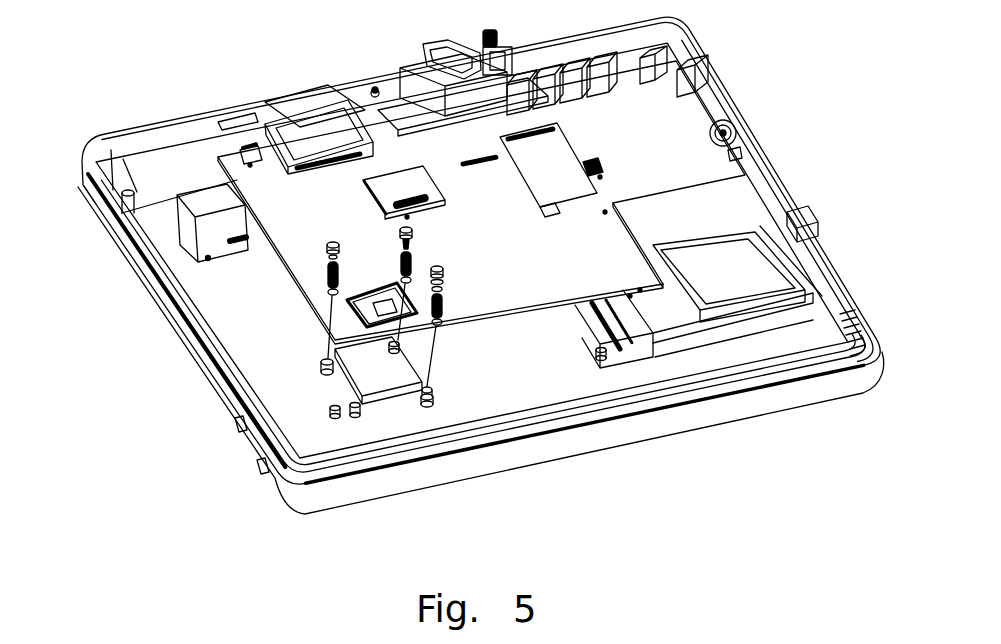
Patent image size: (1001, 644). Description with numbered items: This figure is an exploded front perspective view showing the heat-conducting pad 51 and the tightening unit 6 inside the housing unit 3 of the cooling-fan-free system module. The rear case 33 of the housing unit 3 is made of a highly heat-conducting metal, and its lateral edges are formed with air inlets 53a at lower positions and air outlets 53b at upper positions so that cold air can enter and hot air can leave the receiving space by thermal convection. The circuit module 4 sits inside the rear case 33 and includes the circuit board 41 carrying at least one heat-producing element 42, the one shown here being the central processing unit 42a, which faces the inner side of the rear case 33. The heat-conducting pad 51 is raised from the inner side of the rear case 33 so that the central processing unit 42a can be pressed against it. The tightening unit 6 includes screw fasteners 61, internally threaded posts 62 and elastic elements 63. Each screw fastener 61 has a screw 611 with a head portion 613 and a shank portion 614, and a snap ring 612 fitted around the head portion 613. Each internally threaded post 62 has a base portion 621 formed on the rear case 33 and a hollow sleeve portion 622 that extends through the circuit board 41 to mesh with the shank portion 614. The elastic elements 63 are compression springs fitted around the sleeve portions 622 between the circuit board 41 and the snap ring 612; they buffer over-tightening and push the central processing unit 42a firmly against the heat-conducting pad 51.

The housing unit 3 is at (803, 400).
The circuit module 4 is at (680, 125).
The rear case 33 is at (107, 213).
The circuit board 41 is at (410, 143).
The heat-producing element 42 is at (357, 249).
The central processing unit (CPU) 42a is at (395, 350).
The heat-conducting pad 51 is at (377, 380).
The air inlets 53a is at (88, 190).
The air outlets 53b is at (257, 463).
The tightening unit 6 is at (480, 268).
The screw fastener 61 is at (333, 250).
The internally threaded post 62 is at (322, 368).
The elastic element 63 is at (330, 276).
The screw 611 is at (437, 271).
The snap ring 612 is at (443, 281).
The head portion 613 is at (443, 288).
The shank portion 614 is at (443, 296).
The base portion 621 is at (433, 403).
The sleeve portion 622 is at (430, 392).